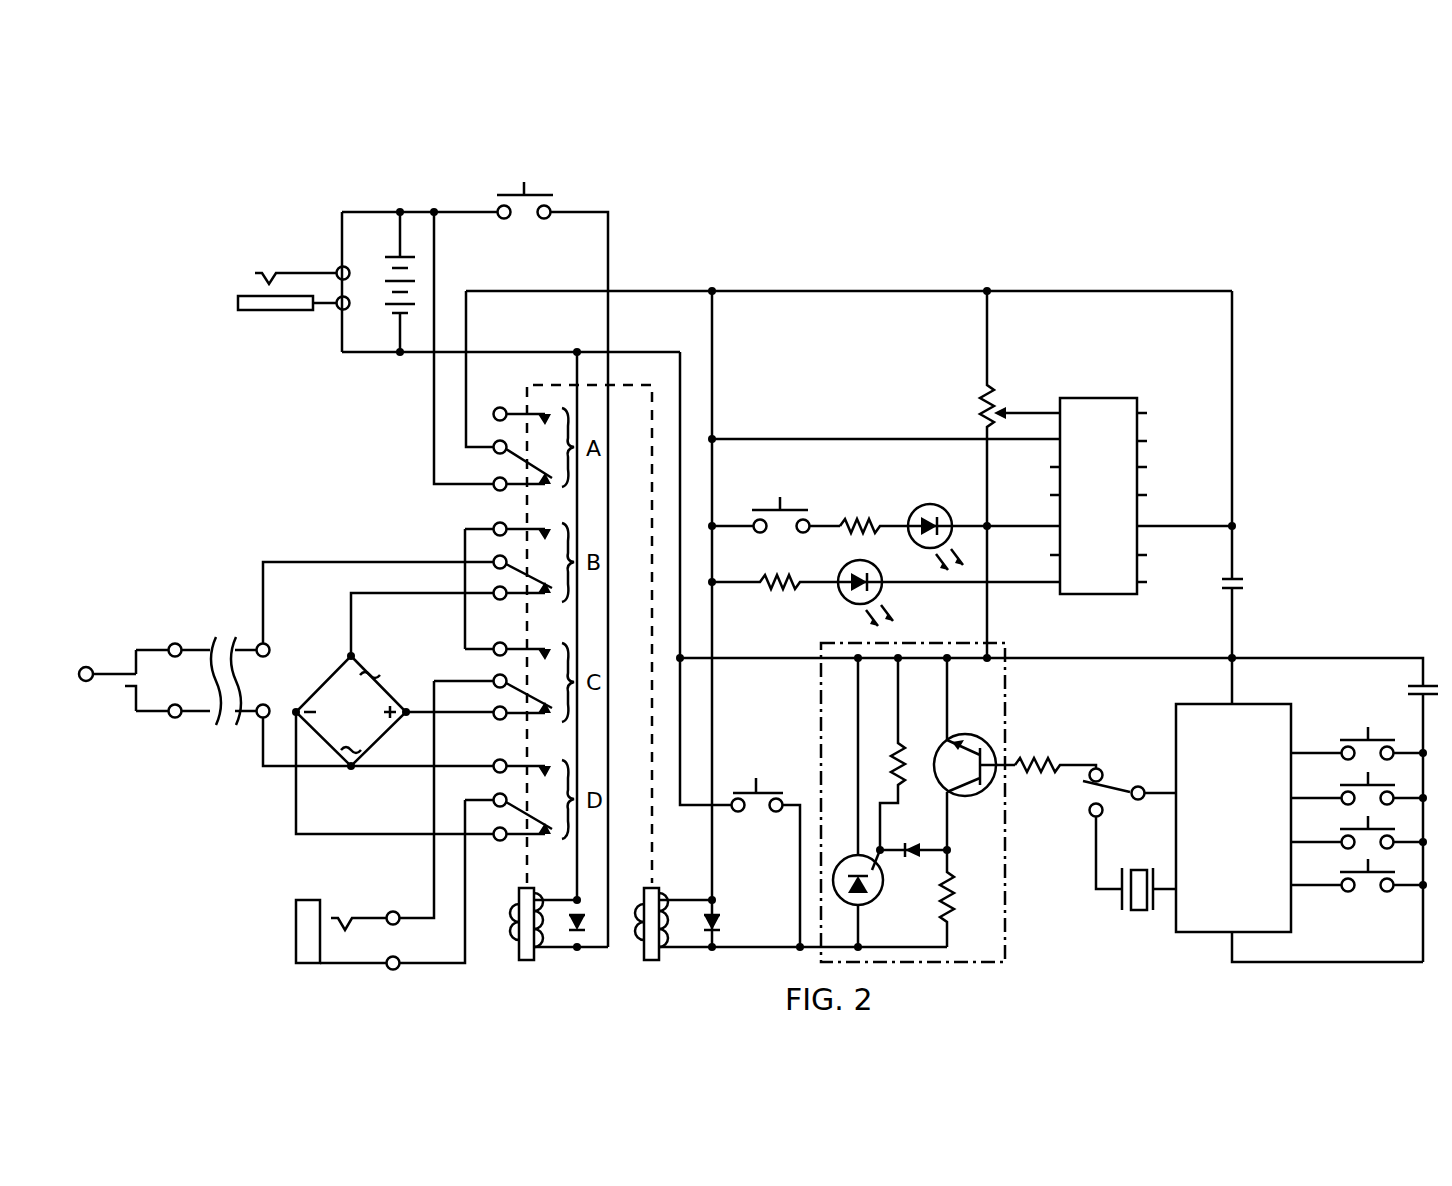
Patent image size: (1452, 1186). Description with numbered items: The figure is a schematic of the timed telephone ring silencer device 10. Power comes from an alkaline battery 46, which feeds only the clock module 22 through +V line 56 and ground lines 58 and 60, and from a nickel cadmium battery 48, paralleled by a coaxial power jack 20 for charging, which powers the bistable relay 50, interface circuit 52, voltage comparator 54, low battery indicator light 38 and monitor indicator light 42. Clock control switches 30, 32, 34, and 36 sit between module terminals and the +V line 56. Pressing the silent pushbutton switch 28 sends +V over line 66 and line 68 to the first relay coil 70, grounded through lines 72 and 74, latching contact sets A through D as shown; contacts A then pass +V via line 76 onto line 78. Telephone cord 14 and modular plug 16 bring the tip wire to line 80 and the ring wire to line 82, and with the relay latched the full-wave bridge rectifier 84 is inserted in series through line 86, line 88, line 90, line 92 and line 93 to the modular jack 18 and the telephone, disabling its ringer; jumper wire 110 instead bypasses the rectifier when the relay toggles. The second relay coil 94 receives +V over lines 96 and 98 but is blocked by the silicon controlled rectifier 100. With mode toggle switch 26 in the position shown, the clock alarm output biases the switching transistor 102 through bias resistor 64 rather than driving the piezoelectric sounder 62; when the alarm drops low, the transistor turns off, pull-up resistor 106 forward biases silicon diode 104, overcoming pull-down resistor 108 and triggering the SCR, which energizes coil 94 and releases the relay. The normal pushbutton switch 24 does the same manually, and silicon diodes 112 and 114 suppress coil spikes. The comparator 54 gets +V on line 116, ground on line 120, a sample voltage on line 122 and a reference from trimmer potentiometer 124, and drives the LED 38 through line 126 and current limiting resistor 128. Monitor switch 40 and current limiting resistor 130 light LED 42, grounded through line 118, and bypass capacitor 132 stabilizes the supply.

The timed telephone ring silencer device 10 is at (158, 437).
The telephone cord 14 is at (196, 646).
The modular plug 16 is at (136, 713).
The modular jack 18 is at (282, 936).
The coaxial power jack 20 is at (278, 257).
The clock module 22 is at (1205, 704).
The normal pushbutton switch 24 is at (772, 792).
The mode toggle switch 26 is at (1108, 774).
The silent pushbutton switch 28 is at (513, 194).
The clock control switch 30 is at (1346, 873).
The clock control switch 32 is at (1346, 830).
The clock control switch 34 is at (1346, 786).
The clock control switch 36 is at (1346, 741).
The low battery indicator light 38 is at (846, 566).
The monitor switch 40 is at (768, 504).
The monitor indicator light 42 is at (920, 504).
The alkaline battery 46 is at (1416, 696).
The nickel cadmium battery 48 is at (394, 256).
The bistable relay 50 is at (555, 976).
The interface circuit 52 is at (820, 708).
The voltage comparator 54 is at (1106, 398).
The +V line 56 is at (1376, 960).
The ground line 58 is at (1125, 658).
The line 60 is at (1234, 694).
The piezoelectric sounder 62 is at (1146, 912).
The bias resistor 64 is at (1032, 750).
The line 66 is at (470, 210).
The line 68 is at (608, 248).
The first relay coil 70 is at (520, 890).
The line 72 is at (577, 384).
The line 74 is at (534, 351).
The line 76 is at (434, 410).
The +V line 78 is at (821, 290).
The line 80 is at (377, 562).
The line 82 is at (270, 768).
The full-wave bridge rectifier 84 is at (327, 682).
The line 86 is at (351, 622).
The line 88 is at (489, 718).
The line 90 is at (434, 887).
The line 92 is at (377, 832).
The line 93 is at (464, 964).
The second relay coil 94 is at (659, 890).
The line 96 is at (714, 328).
The line 98 is at (754, 970).
The silicon controlled rectifier 100 is at (880, 894).
The switching transistor 102 is at (950, 728).
The silicon diode 104 is at (942, 868).
The pull-up resistor 106 is at (951, 895).
The pull-down resistor 108 is at (902, 784).
The jumper wire 110 is at (465, 640).
The silicon diode 112 is at (718, 926).
The silicon diode 114 is at (598, 948).
The line 116 is at (1206, 526).
The line 118 is at (988, 610).
The line 120 is at (1042, 524).
The line 122 is at (810, 438).
The trimmer potentiometer 124 is at (972, 410).
The line 126 is at (910, 587).
The current limiting resistor 128 is at (792, 590).
The current limiting resistor 130 is at (876, 510).
The bypass capacitor 132 is at (1238, 580).